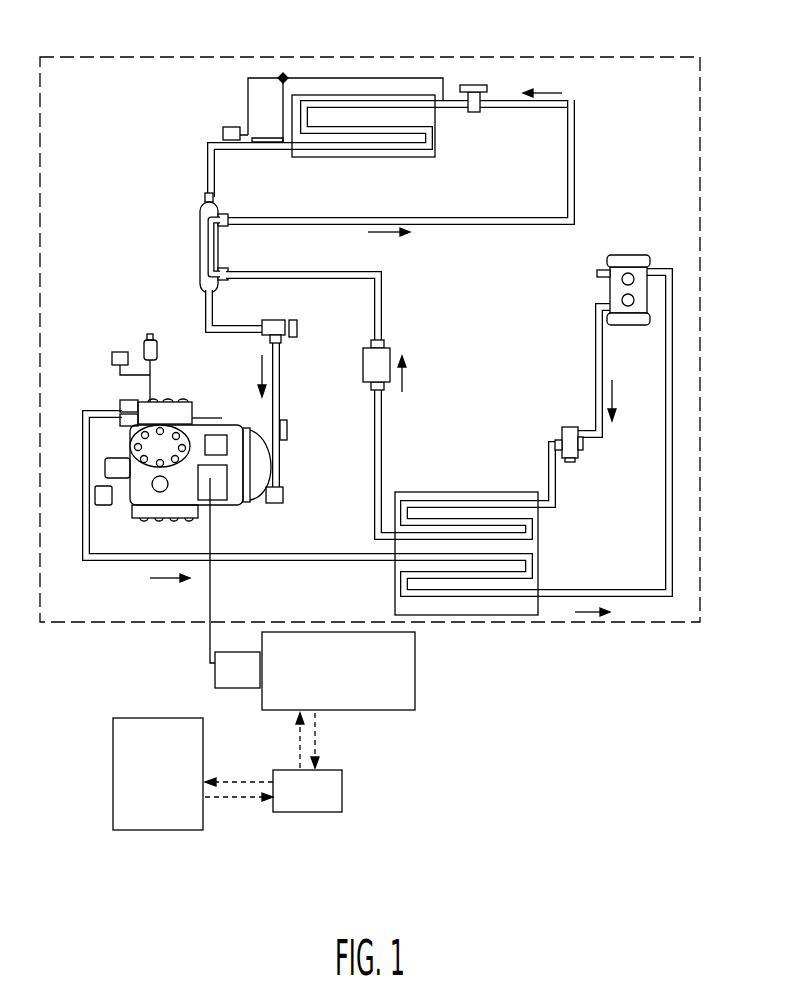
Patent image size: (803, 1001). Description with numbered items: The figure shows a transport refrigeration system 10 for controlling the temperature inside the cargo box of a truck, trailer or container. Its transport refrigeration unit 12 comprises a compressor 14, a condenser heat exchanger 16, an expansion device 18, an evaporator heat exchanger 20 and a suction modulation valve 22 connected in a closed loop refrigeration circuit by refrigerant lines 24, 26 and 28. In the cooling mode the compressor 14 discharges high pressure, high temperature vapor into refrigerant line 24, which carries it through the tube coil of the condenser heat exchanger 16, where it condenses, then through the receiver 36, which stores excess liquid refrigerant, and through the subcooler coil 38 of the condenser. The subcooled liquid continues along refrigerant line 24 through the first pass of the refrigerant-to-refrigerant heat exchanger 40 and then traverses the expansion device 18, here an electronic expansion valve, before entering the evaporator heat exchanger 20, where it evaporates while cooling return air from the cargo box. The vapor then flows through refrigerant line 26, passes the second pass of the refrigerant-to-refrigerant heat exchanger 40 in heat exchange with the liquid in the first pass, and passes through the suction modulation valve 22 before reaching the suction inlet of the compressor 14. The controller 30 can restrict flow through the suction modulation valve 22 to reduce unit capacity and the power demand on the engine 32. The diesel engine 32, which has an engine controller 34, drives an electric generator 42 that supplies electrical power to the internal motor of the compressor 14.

The transport refrigeration system 10 is at (541, 654).
The transport refrigeration unit 12 is at (155, 56).
The compressor 14 is at (235, 505).
The condenser heat exchanger 16 is at (535, 575).
The expansion device 18 is at (485, 98).
The evaporator heat exchanger 20 is at (455, 137).
The suction modulation valve 22 is at (277, 318).
The refrigerant line 24 is at (331, 553).
The refrigerant line 26 is at (385, 320).
The refrigerant line 28 is at (204, 185).
The controller 30 is at (170, 832).
The engine 32 is at (350, 712).
The engine controller 34 is at (342, 792).
The receiver 36 is at (628, 327).
The subcooler coil 38 is at (455, 500).
The refrigerant-to-refrigerant heat exchanger 40 is at (220, 245).
The electric generator 42 is at (222, 690).